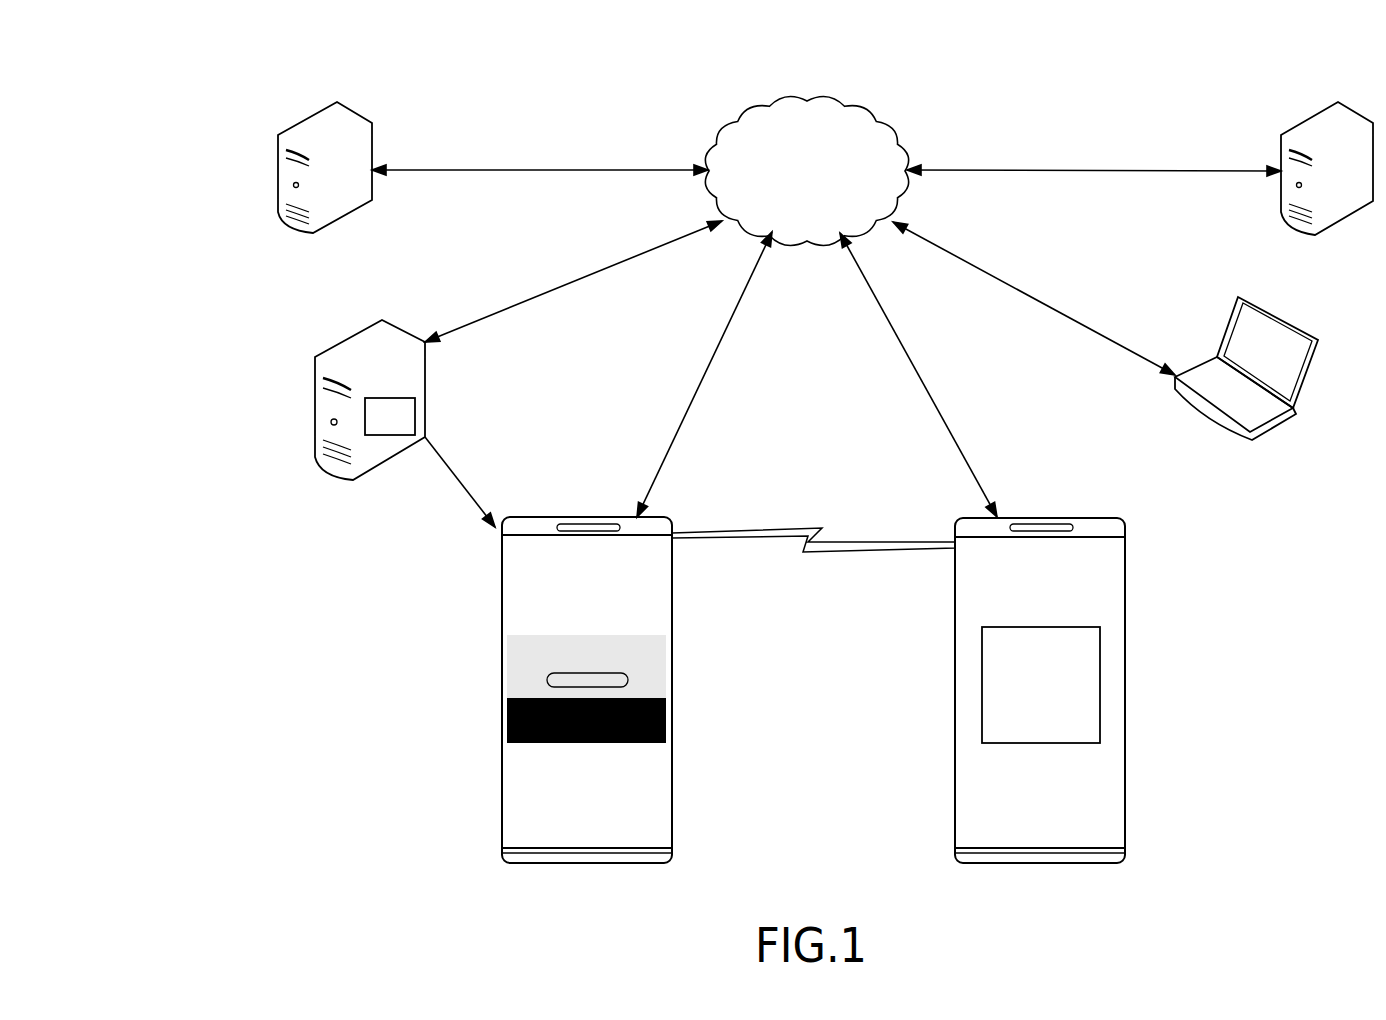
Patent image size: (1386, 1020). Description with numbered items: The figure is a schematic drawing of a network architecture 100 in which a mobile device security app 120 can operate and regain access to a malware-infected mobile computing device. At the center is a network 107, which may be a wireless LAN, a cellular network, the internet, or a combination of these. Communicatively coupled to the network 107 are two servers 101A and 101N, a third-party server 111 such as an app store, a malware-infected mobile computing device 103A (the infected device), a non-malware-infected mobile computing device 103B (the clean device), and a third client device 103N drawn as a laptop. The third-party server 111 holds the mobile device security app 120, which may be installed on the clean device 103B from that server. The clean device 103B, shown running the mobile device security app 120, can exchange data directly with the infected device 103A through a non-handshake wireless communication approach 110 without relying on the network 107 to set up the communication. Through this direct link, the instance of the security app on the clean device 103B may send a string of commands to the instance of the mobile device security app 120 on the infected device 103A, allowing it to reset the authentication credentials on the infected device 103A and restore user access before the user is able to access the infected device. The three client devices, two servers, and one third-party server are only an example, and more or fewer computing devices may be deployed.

The network architecture 100 is at (175, 82).
The server 101A is at (337, 102).
The server 101N is at (1338, 102).
The malware-infected mobile computing device 103A is at (502, 856).
The non-malware-infected mobile computing device 103B is at (955, 856).
The third client device 103N is at (1250, 438).
The network 107 is at (788, 195).
The non-handshake wireless communication approach 110 is at (820, 553).
The third-party server 111 is at (382, 320).
The mobile device security app 120 is at (380, 426).